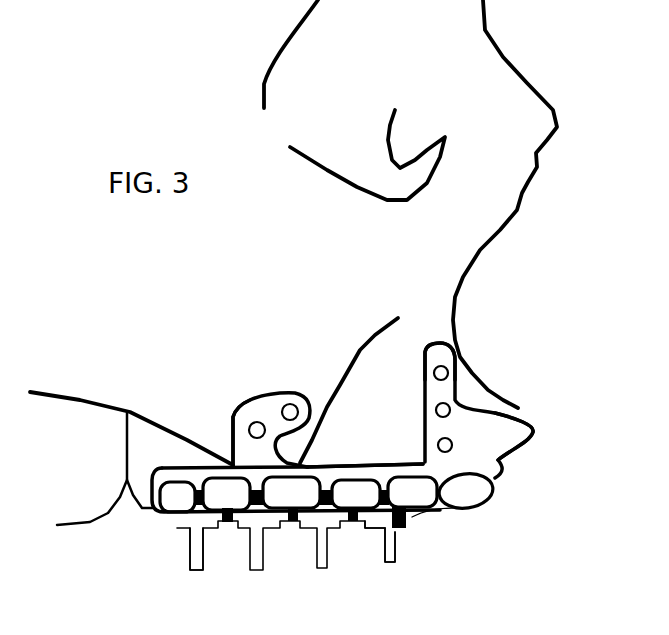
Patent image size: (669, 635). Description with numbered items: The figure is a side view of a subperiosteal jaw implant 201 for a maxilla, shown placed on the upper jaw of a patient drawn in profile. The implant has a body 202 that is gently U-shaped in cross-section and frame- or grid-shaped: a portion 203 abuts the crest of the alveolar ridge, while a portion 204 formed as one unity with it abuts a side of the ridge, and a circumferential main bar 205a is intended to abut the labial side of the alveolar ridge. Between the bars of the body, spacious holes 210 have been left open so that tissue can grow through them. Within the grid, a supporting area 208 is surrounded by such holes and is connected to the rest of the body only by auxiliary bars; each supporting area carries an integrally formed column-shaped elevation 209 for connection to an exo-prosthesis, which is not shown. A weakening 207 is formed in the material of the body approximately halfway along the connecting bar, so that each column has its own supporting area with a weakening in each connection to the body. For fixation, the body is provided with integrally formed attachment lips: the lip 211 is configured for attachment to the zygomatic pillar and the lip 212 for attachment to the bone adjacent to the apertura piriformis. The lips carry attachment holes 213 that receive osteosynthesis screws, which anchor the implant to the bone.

The subperiosteal jaw implant 201 is at (292, 553).
The body 202 is at (258, 472).
The portion abutting the crest of the alveolar ridge 203 is at (173, 518).
The portion abutting the side of the alveolar ridge 204 is at (332, 477).
The main bar 205a is at (503, 463).
The weakening 207 is at (473, 508).
The supporting area 208 is at (392, 520).
The column-shaped elevation 209 is at (323, 562).
The hole 210 is at (223, 493).
The attachment lip 211 is at (262, 405).
The attachment lip 212 is at (450, 362).
The attachment hole 213 is at (296, 404).